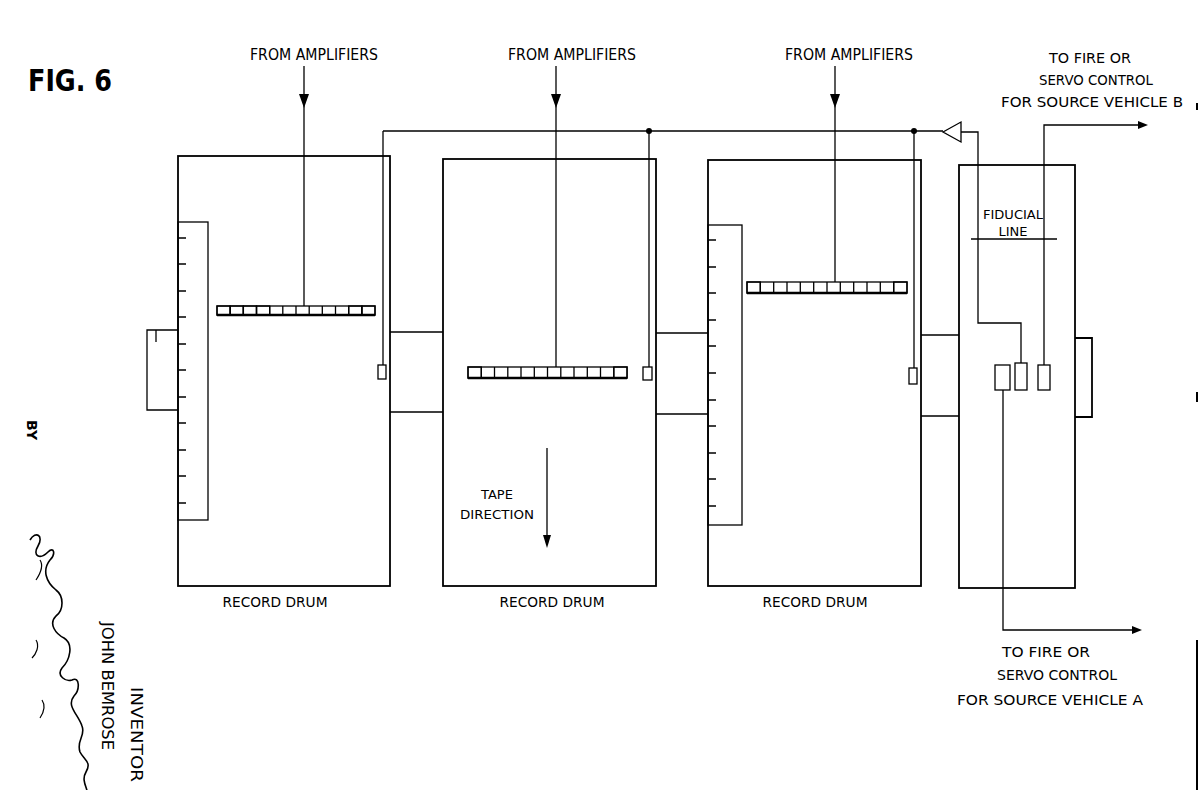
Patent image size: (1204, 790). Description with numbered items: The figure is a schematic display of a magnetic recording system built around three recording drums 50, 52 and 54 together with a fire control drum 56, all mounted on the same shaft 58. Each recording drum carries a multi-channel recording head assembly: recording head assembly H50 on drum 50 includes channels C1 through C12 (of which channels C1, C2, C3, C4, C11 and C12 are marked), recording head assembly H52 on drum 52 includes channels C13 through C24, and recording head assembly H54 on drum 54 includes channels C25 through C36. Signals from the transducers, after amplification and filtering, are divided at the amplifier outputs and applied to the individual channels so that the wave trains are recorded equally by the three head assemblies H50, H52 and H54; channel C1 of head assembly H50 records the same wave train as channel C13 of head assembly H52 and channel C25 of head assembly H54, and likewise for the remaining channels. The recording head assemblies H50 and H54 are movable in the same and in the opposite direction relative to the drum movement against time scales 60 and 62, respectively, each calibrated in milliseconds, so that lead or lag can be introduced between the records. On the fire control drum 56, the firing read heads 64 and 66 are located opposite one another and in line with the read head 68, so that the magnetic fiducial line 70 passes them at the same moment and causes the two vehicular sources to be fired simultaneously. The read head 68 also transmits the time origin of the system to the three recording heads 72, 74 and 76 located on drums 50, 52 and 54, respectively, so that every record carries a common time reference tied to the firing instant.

The recording drum 50 is at (360, 548).
The recording drum 52 is at (633, 547).
The recording drum 54 is at (893, 551).
The fire control drum 56 is at (1013, 176).
The shaft 58 is at (156, 330).
The time scale 60 is at (184, 222).
The time scale 62 is at (720, 525).
The firing read head 64 is at (1003, 365).
The firing read head 66 is at (1050, 383).
The read head 68 is at (1021, 391).
The magnetic fiducial line 70 is at (1000, 241).
The recording head 72 is at (378, 373).
The recording head 74 is at (643, 381).
The recording head 76 is at (908, 384).
The recording head assembly H50 is at (307, 320).
The recording head assembly H52 is at (545, 384).
The recording head assembly H54 is at (835, 300).
The channel C1 is at (235, 306).
The channel C2 is at (236, 316).
The channel C3 is at (250, 306).
The channel C4 is at (263, 316).
The channel C11 is at (358, 306).
The channel C12 is at (368, 316).
The channel C13 is at (474, 367).
The channel C24 is at (621, 367).
The channel C25 is at (752, 294).
The channel C36 is at (897, 294).